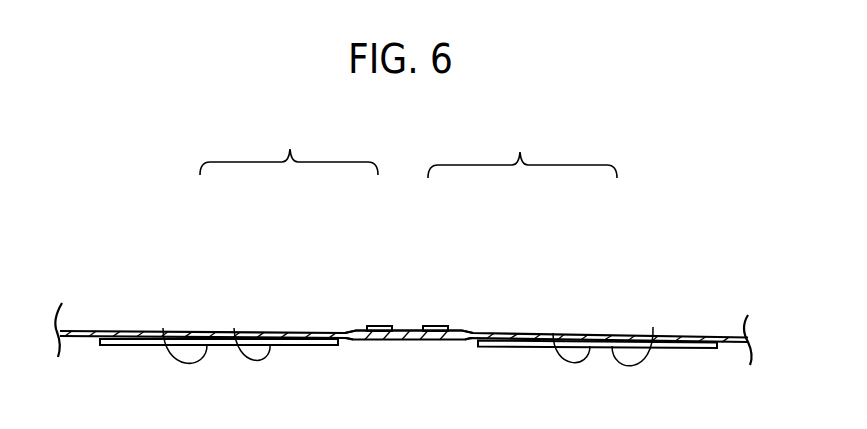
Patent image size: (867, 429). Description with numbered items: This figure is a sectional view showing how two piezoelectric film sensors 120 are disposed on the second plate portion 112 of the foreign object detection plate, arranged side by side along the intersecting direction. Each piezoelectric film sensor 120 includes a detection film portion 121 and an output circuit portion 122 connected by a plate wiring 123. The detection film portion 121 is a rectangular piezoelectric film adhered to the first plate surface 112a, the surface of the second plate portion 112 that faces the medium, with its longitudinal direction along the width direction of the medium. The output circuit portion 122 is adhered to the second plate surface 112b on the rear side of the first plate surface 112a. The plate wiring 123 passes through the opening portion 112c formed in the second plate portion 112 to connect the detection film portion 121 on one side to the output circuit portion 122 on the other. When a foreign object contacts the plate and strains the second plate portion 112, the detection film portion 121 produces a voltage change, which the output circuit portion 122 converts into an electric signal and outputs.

The second plate portion 112 is at (100, 331).
The first plate surface 112a is at (234, 328).
The second plate surface 112b is at (412, 331).
The opening portion 112c is at (350, 338).
The piezoelectric film sensor 120 is at (408, 148).
The detection film portion 121 is at (163, 328).
The output circuit portion 122 is at (377, 326).
The plate wiring 123 is at (355, 331).